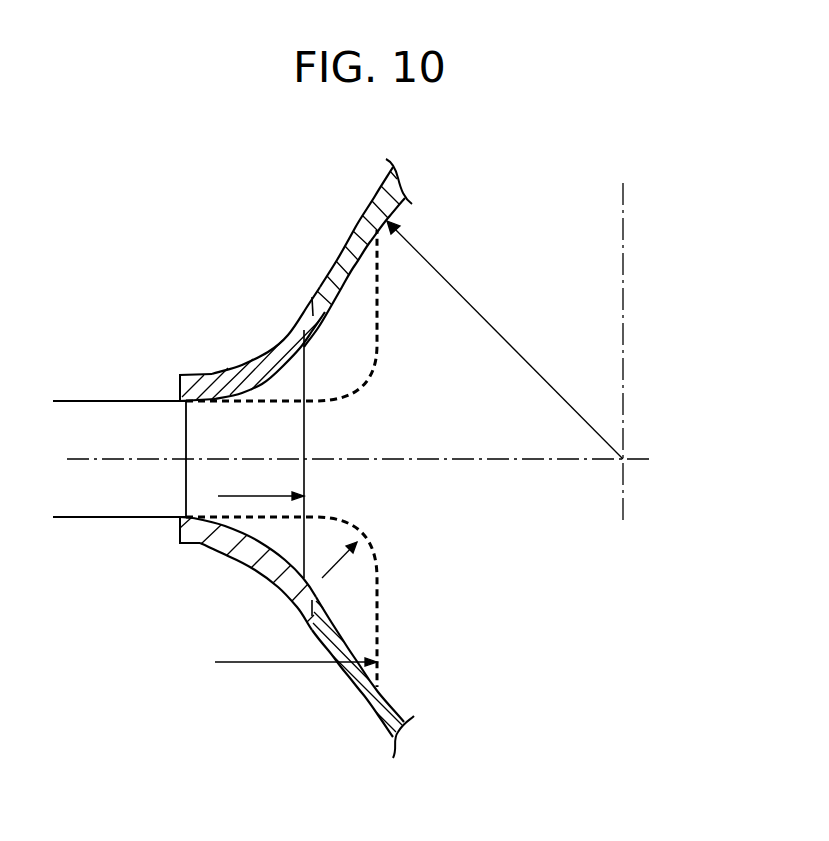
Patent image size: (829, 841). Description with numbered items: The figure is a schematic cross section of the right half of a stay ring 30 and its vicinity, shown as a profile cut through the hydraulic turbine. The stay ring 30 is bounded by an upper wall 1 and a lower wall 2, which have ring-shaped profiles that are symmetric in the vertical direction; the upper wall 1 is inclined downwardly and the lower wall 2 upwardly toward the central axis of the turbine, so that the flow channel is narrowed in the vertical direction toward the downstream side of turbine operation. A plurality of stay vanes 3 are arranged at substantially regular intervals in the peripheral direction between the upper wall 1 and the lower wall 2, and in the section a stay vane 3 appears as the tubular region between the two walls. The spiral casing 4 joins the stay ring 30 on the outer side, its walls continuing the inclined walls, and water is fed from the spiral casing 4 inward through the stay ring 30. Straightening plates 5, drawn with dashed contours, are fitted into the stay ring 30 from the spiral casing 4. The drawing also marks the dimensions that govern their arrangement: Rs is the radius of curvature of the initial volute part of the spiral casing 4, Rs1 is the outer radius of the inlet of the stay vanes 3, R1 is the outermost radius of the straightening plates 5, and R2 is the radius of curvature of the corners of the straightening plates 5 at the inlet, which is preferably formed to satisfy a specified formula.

The stay ring 30 is at (238, 313).
The upper wall 1 is at (230, 367).
The lower wall 2 is at (242, 560).
The stay vane 3 is at (195, 415).
The spiral casing 4 is at (352, 238).
The straightening plate 5 is at (368, 377).
The radius of curvature of the initial volute part of the spiral casing Rs is at (510, 345).
The outer radius of the inlet of the stay vanes Rs1 is at (230, 496).
The outermost radius of the straightening plates R1 is at (288, 661).
The radius of curvature of the corners of the straightening plates at the inlet R2 is at (338, 559).